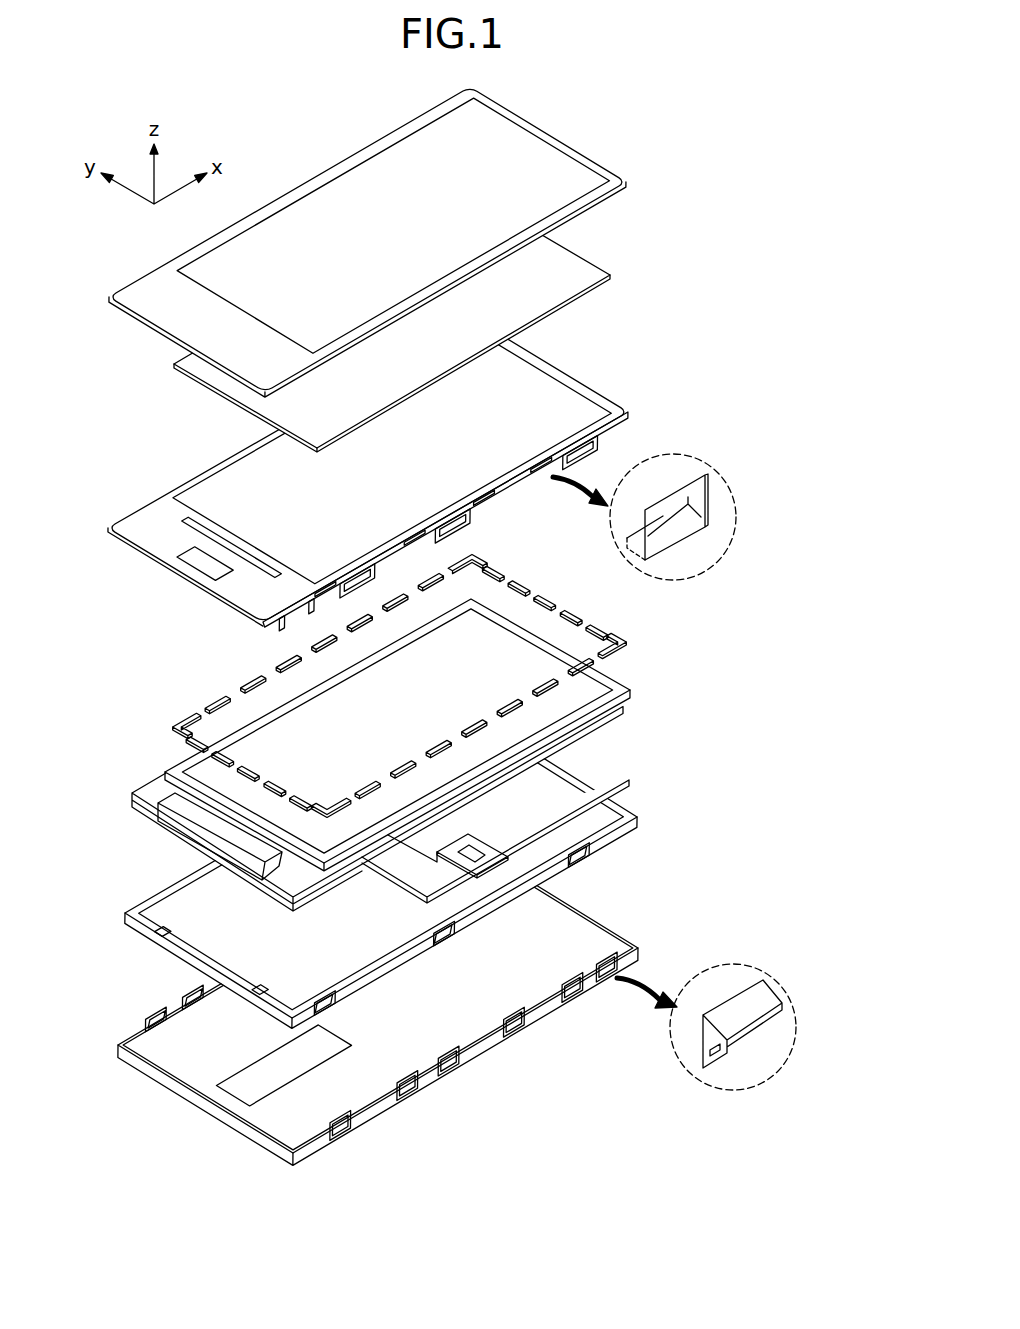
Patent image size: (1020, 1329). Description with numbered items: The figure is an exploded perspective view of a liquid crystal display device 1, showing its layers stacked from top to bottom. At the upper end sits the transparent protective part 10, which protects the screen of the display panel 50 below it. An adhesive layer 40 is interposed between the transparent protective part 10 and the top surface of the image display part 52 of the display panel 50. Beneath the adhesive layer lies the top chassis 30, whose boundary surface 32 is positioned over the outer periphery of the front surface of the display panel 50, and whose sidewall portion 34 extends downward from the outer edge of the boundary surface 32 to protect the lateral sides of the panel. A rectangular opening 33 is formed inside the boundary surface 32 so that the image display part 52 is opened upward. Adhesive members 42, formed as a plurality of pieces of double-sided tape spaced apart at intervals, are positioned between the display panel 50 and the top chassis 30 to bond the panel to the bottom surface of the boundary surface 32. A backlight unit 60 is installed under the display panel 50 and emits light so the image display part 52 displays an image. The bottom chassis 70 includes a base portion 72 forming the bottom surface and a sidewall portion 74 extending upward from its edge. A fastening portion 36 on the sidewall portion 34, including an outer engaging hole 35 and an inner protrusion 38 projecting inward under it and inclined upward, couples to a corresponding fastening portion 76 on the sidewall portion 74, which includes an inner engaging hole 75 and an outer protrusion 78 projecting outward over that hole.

The display device 1 is at (304, 101).
The transparent protective part 10 is at (528, 128).
The adhesive layer 40 is at (571, 263).
The top chassis 30 is at (375, 476).
The rectangular opening 33 is at (215, 556).
The boundary surface 32 is at (452, 523).
The sidewall portion 34 is at (469, 517).
The fastening portion 36 is at (433, 526).
The outer engaging hole 35 is at (701, 486).
The inner protrusion 38 is at (685, 512).
The adhesive members 42 is at (579, 609).
The display panel 50 is at (405, 755).
The image display part 52 is at (557, 701).
The backlight unit 60 is at (565, 822).
The bottom chassis 70 is at (388, 1000).
The base portion 72 is at (378, 996).
The sidewall portion 74 is at (378, 1002).
The corresponding fastening portion 76 is at (628, 916).
The outer protrusion 78 is at (742, 1025).
The inner engaging hole 75 is at (722, 1044).